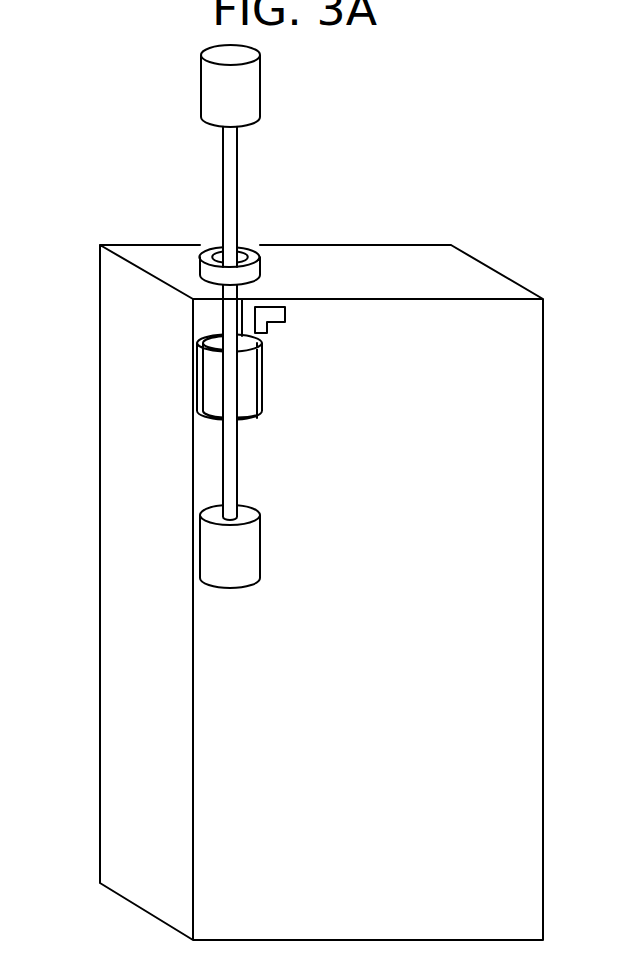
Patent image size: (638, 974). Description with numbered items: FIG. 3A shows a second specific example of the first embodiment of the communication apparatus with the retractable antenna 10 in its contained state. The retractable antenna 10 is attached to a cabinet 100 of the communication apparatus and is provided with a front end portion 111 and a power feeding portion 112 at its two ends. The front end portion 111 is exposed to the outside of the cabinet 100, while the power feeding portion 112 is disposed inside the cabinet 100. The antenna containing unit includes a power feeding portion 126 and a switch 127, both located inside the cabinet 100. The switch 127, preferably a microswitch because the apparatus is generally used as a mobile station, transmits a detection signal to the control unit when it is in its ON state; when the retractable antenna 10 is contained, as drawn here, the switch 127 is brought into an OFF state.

The retractable antenna 10 is at (188, 180).
The cabinet 100 is at (490, 280).
The front end portion 111 is at (207, 92).
The power feeding portion 112 is at (215, 558).
The power feeding portion 126 is at (203, 387).
The switch 127 is at (286, 310).